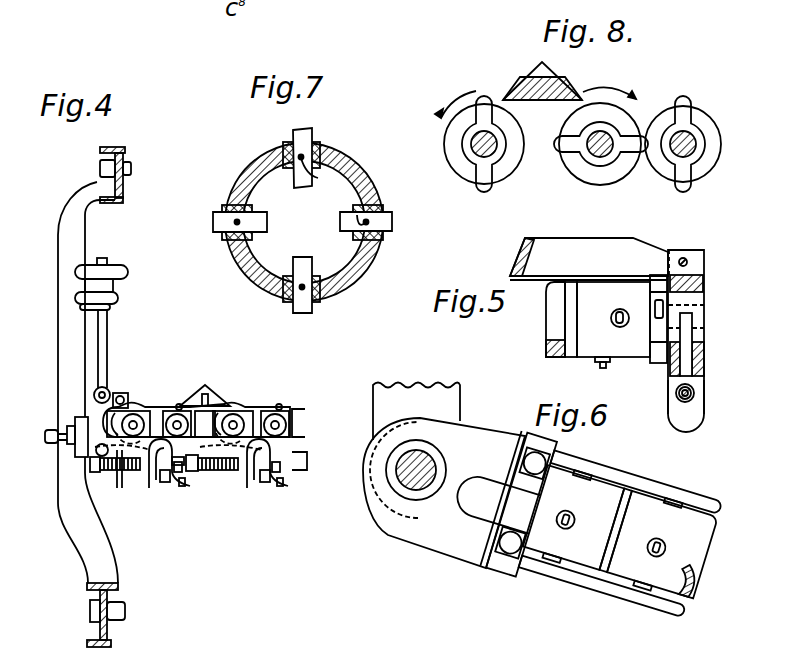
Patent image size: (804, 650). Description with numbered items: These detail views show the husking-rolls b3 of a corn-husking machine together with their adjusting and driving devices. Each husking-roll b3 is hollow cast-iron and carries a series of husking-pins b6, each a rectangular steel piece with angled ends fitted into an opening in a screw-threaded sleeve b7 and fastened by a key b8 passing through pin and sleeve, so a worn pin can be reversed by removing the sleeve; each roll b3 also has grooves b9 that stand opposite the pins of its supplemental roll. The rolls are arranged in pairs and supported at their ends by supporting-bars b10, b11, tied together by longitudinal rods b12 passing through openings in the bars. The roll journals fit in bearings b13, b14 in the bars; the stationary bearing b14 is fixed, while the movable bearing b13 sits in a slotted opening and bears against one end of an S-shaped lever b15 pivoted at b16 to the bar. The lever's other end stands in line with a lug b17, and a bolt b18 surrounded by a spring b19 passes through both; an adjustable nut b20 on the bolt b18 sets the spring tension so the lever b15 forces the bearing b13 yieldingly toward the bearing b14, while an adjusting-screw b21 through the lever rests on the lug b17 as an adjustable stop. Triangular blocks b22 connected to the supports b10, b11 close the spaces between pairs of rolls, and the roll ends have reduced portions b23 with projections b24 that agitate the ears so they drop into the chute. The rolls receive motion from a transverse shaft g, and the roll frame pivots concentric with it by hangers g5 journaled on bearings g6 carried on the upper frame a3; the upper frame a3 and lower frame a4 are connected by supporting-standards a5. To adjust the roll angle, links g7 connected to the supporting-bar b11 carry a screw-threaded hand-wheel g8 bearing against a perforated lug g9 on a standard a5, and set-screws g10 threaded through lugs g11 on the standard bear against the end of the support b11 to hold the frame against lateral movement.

In FIG. 4, the upper auxiliary frame a3 is at (125, 150).
In FIG. 4, the lower auxiliary frame a4 is at (97, 591).
In FIG. 4, the supporting-standard a5 is at (58, 272).
In FIG. 6, the transverse shaft g is at (426, 468).
In FIG. 6, the hanger g5 is at (496, 437).
In FIG. 6, the bearing g6 is at (416, 409).
In FIG. 4, the link g7 is at (108, 326).
In FIG. 4, the hand-wheel g8 is at (118, 265).
In FIG. 4, the lug g9 is at (118, 291).
In FIG. 4, the set-screw g10 is at (46, 435).
In FIG. 4, the lug g11 is at (80, 442).
In FIG. 7, the husking-roll b3 is at (342, 157).
In FIG. 8, the husking-roll b3 is at (456, 172).
In FIG. 5, the husking-roll b3 is at (547, 333).
In FIG. 6, the husking-roll b3 is at (705, 538).
In FIG. 7, the husking-pin b6 is at (292, 132).
In FIG. 5, the husking-pin b6 is at (614, 314).
In FIG. 6, the husking-pin b6 is at (657, 543).
In FIG. 7, the screw-threaded sleeve b7 is at (315, 147).
In FIG. 5, the screw-threaded sleeve b7 is at (617, 323).
In FIG. 6, the screw-threaded sleeve b7 is at (568, 527).
In FIG. 7, the key b8 is at (357, 215).
In FIG. 5, the groove b9 is at (572, 357).
In FIG. 6, the groove b9 is at (632, 500).
In FIG. 6, the supporting-bar b10 is at (514, 500).
In FIG. 4, the supporting-bar b11 is at (270, 406).
In FIG. 5, the supporting-bar b11 is at (706, 283).
In FIG. 4, the longitudinal rod b12 is at (128, 395).
In FIG. 6, the longitudinal rod b12 is at (686, 502).
In FIG. 4, the movable bearing b13 is at (135, 413).
In FIG. 5, the movable bearing b13 is at (703, 335).
In FIG. 4, the stationary bearing b14 is at (179, 410).
In FIG. 4, the S-shaped lever b15 is at (273, 468).
In FIG. 5, the S-shaped lever b15 is at (692, 361).
In FIG. 4, the pivot b16 is at (238, 484).
In FIG. 4, the lug b17 is at (272, 487).
In FIG. 5, the lug b17 is at (706, 393).
In FIG. 4, the bolt b18 is at (218, 475).
In FIG. 5, the bolt b18 is at (676, 393).
In FIG. 4, the spring b19 is at (117, 480).
In FIG. 5, the spring b19 is at (677, 404).
In FIG. 4, the adjustable nut b20 is at (213, 471).
In FIG. 4, the adjusting-screw b21 is at (281, 489).
In FIG. 4, the triangular block b22 is at (213, 380).
In FIG. 8, the triangular block b22 is at (523, 78).
In FIG. 8, the reduced portion b23 is at (465, 144).
In FIG. 5, the reduced portion b23 is at (656, 318).
In FIG. 4, the projection b24 is at (180, 405).
In FIG. 8, the projection b24 is at (561, 150).
In FIG. 5, the projection b24 is at (650, 292).